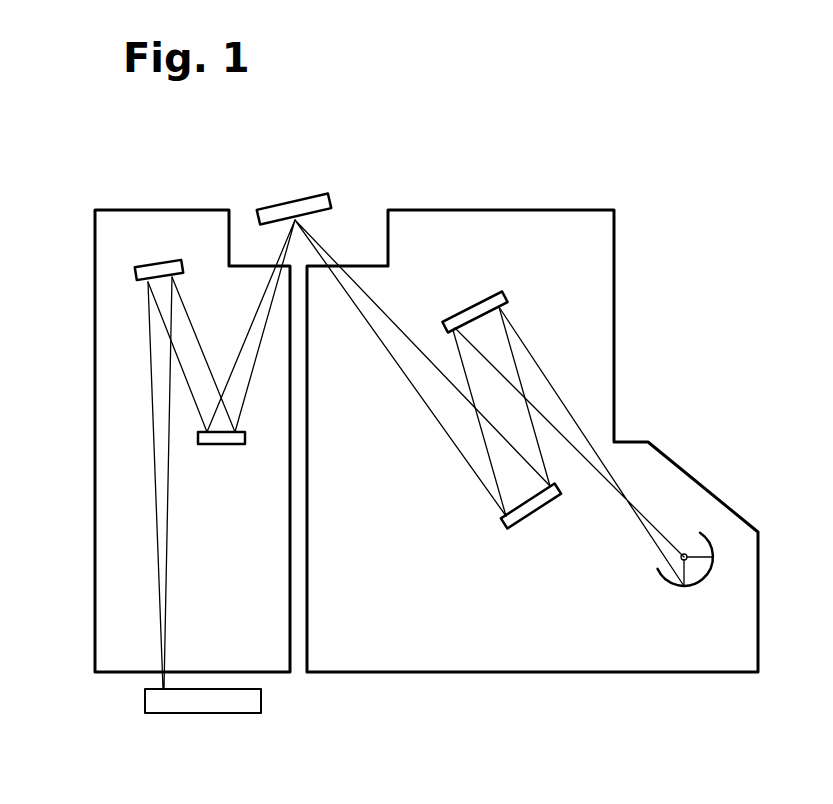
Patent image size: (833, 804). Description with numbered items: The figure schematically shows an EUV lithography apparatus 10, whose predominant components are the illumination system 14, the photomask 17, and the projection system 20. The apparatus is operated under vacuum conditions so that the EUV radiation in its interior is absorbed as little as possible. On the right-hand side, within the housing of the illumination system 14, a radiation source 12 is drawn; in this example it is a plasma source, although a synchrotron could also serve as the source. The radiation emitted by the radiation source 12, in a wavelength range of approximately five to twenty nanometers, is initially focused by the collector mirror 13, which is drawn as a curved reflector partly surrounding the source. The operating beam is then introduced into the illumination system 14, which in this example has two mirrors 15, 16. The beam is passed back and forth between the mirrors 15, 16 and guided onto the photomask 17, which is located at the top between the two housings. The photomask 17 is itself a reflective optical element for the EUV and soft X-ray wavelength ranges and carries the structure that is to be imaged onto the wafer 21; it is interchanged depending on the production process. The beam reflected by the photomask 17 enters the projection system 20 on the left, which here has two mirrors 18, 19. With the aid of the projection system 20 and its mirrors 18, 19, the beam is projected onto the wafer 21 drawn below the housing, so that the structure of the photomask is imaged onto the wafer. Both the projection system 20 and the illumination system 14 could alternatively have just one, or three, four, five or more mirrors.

The EUV lithography apparatus 10 is at (743, 293).
The radiation source 12 is at (684, 553).
The collector mirror 13 is at (661, 584).
The illumination system 14 is at (426, 673).
The mirror 15 is at (467, 300).
The mirror 16 is at (535, 509).
The photomask 17 is at (305, 200).
The mirror 18 is at (221, 446).
The mirror 19 is at (165, 260).
The projection system 20 is at (118, 210).
The wafer 21 is at (209, 703).